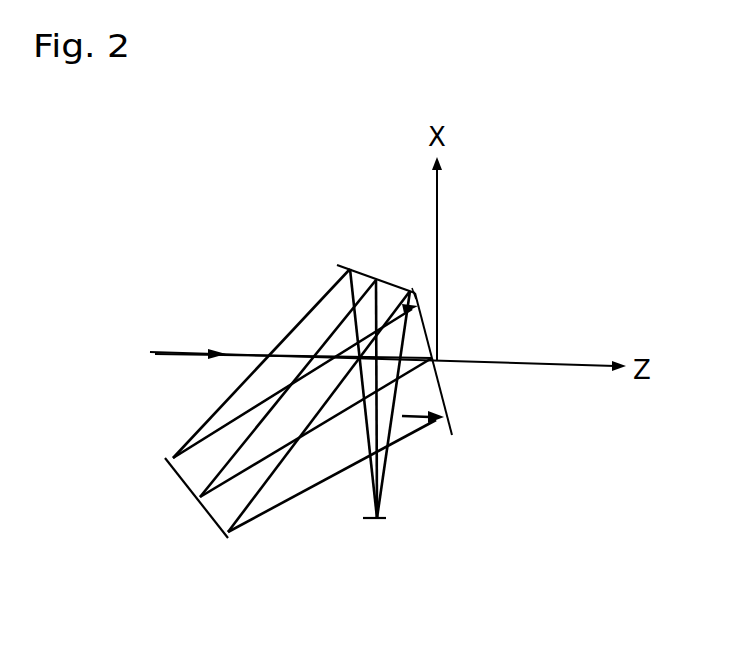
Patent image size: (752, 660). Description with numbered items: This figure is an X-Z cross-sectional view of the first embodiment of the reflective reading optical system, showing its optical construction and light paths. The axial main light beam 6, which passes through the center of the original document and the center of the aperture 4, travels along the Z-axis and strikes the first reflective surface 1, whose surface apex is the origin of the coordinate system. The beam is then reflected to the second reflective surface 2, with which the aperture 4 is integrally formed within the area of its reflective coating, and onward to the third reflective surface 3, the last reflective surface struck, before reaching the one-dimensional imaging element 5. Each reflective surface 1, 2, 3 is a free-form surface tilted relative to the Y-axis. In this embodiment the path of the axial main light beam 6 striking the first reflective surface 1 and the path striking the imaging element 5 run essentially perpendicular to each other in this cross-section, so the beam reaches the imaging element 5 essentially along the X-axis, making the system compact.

The first reflective surface 1 is at (454, 436).
The second reflective surface 2 is at (145, 490).
The third reflective surface 3 is at (363, 274).
The aperture 4 is at (168, 465).
The imaging element 5 is at (385, 520).
The axial main light beam 6 is at (175, 352).